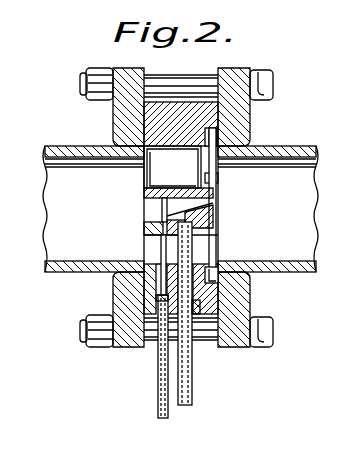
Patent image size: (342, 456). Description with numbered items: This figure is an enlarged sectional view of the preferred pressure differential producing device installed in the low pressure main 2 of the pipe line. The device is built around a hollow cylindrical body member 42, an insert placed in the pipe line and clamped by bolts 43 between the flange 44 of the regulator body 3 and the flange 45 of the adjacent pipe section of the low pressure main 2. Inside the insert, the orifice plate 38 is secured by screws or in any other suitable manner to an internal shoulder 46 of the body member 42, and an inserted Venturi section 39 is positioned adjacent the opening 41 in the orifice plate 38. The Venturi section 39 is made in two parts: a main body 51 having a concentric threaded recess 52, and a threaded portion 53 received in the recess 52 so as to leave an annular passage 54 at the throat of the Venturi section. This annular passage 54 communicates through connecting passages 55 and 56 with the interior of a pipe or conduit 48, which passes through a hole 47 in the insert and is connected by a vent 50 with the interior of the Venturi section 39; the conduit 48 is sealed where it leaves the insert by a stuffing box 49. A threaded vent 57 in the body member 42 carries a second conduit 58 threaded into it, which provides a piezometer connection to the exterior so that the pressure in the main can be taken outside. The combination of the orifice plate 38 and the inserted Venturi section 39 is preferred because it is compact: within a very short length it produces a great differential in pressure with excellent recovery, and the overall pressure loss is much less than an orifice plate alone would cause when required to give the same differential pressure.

The low pressure main 2 is at (306, 145).
The regulator body 3 is at (48, 146).
The orifice plate 38 is at (211, 268).
The Venturi section 39 is at (214, 183).
The opening 41 is at (212, 247).
The body member 42 is at (163, 119).
The bolts 43 is at (270, 93).
The flange 44 is at (120, 292).
The flange 45 is at (233, 131).
The internal shoulder 46 is at (143, 135).
The hole 47 is at (181, 247).
The conduit 48 is at (193, 378).
The stuffing box 49 is at (200, 323).
The vent 50 is at (172, 226).
The main body 51 is at (180, 188).
The threaded recess 52 is at (143, 177).
The threaded portion 53 is at (146, 224).
The annular passage 54 is at (162, 198).
The connecting passage 55 is at (172, 212).
The connecting passage 56 is at (204, 222).
The threaded vent 57 is at (147, 259).
The conduit 58 is at (157, 368).